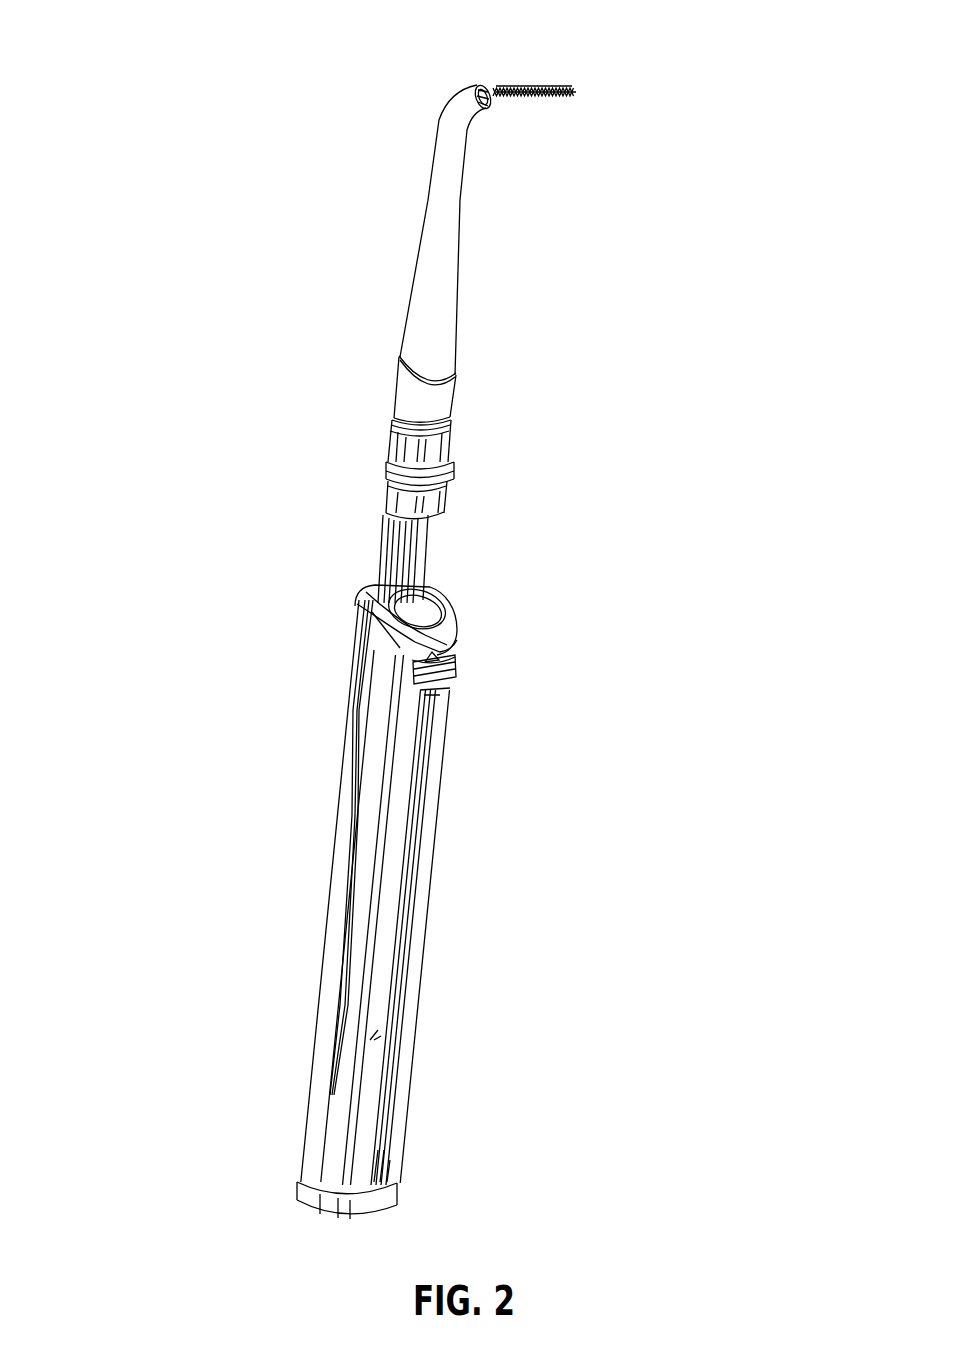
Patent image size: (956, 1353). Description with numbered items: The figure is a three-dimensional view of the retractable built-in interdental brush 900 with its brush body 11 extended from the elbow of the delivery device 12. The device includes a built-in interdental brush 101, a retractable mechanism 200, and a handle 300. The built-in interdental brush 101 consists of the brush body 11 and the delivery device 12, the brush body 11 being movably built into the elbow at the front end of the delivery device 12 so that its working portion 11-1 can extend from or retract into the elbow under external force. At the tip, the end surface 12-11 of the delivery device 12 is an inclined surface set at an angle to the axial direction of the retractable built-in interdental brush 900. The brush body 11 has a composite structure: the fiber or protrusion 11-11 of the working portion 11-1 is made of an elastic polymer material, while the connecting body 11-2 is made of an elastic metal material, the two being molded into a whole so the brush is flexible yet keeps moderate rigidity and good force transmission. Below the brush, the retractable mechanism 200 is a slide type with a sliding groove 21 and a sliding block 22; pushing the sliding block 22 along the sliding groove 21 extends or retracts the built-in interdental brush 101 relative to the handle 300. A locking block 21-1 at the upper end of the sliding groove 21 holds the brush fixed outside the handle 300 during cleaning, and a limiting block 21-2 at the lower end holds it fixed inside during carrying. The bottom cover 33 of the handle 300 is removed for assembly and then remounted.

The retractable built-in interdental brush 900 is at (140, 354).
The delivery device 12 is at (447, 110).
The end surface 12-11 is at (480, 84).
The brush body 11 is at (428, 452).
The fiber or protrusion 11-11 is at (519, 91).
The connecting body 11-2 is at (577, 89).
The working portion 11-1 is at (520, 95).
The built-in interdental brush 101 is at (430, 320).
The retractable mechanism 200 is at (450, 612).
The sliding block 22 is at (458, 667).
The locking block 21-1 is at (448, 695).
The sliding groove 21 is at (437, 795).
The handle 300 is at (423, 928).
The limiting block 21-2 is at (393, 1165).
The bottom cover 33 is at (392, 1207).